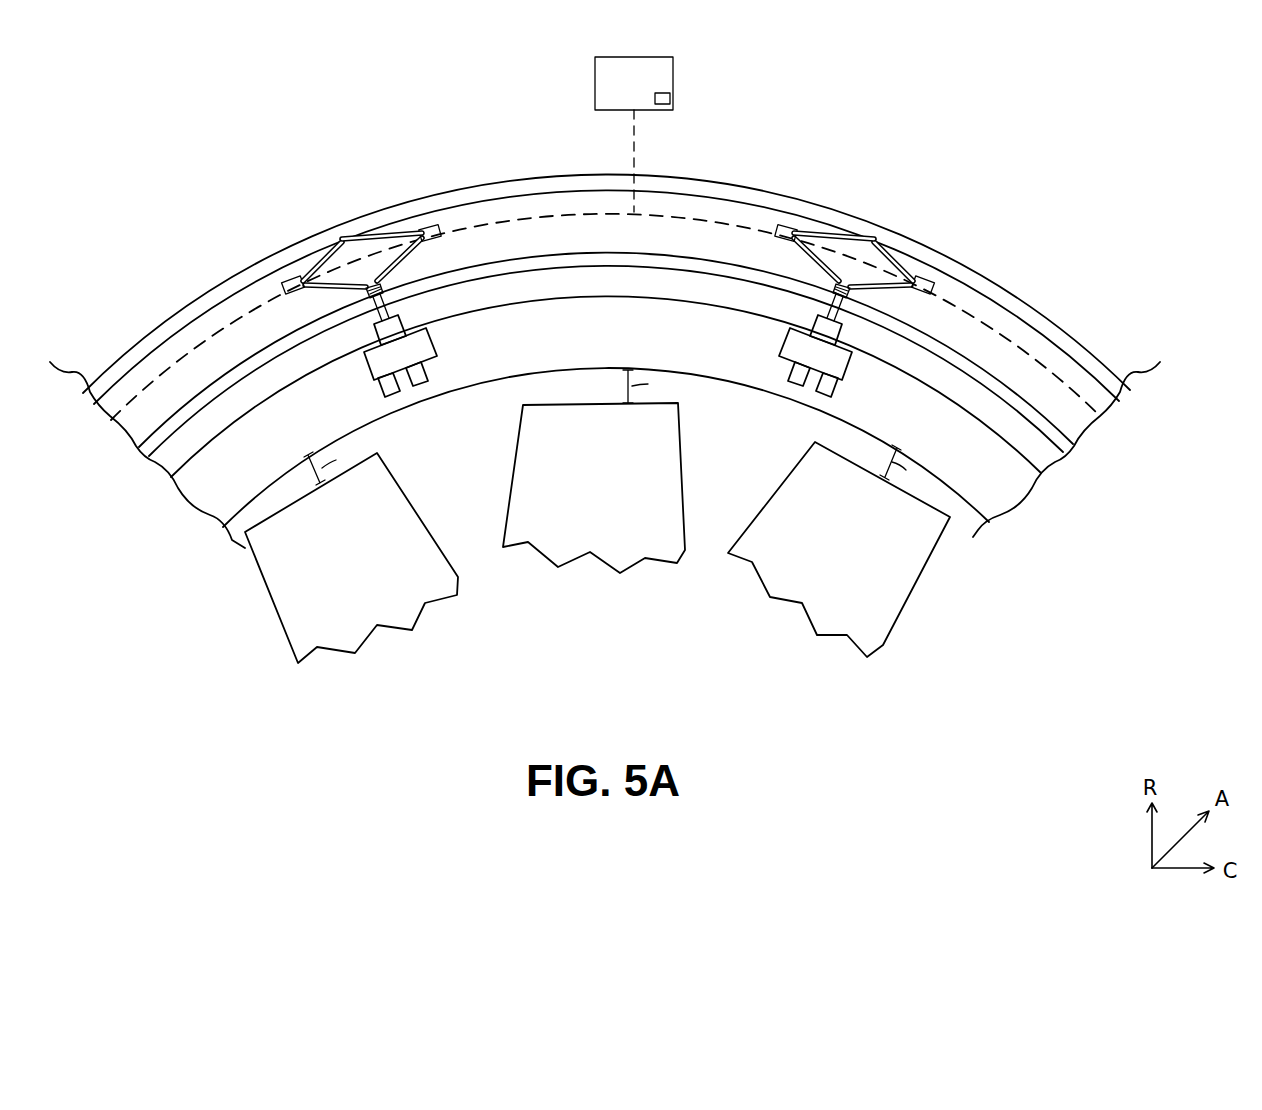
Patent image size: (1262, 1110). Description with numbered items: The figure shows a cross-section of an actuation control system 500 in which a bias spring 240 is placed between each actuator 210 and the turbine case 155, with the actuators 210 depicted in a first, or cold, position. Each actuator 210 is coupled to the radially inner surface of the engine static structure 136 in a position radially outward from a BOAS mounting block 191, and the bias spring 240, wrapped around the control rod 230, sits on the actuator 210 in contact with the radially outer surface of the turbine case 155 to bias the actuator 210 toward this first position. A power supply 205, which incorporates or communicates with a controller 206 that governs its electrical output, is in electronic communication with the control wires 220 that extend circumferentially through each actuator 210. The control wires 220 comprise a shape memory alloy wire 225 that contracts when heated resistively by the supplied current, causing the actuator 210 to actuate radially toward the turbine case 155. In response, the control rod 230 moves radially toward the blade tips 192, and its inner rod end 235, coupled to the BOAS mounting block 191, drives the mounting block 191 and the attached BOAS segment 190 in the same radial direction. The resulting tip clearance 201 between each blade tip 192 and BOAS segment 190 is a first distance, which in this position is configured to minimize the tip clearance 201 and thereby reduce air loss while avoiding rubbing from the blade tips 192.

The engine static structure 136 is at (95, 386).
The turbine case 155 is at (160, 437).
The blade outer air seal (BOAS) segment 190 is at (205, 488).
The BOAS mounting block 191 is at (430, 360).
The blade tip 192 is at (597, 533).
The tip clearance 201 is at (601, 439).
The power supply 205 is at (598, 62).
The controller 206 is at (670, 100).
The actuator 210 is at (299, 260).
The control wire 220 is at (597, 212).
The shape memory alloy (SMA) wire 225 is at (332, 248).
The control rod 230 is at (358, 250).
The inner rod end 235 is at (395, 385).
The bias spring 240 is at (385, 290).
The actuation control system 500 is at (1060, 202).